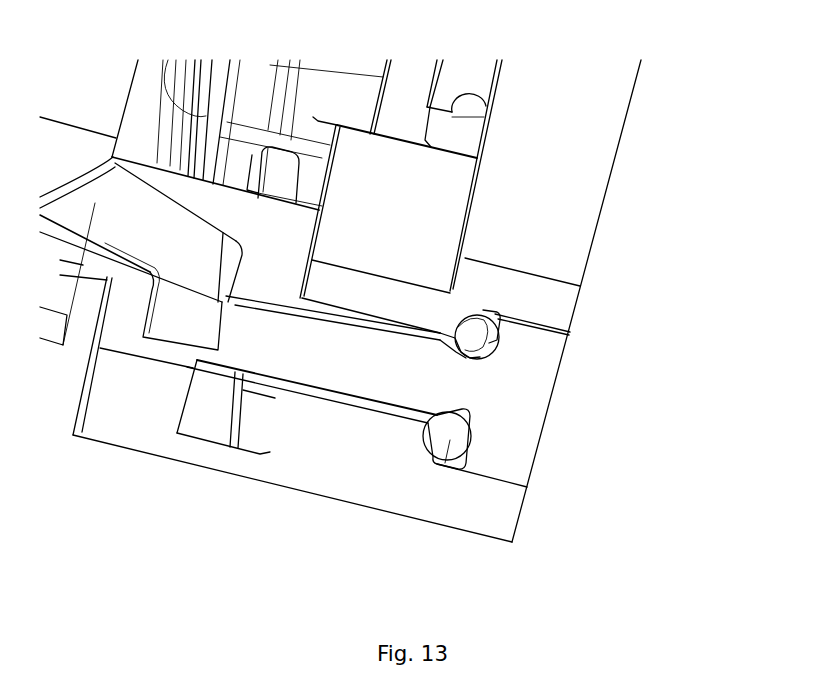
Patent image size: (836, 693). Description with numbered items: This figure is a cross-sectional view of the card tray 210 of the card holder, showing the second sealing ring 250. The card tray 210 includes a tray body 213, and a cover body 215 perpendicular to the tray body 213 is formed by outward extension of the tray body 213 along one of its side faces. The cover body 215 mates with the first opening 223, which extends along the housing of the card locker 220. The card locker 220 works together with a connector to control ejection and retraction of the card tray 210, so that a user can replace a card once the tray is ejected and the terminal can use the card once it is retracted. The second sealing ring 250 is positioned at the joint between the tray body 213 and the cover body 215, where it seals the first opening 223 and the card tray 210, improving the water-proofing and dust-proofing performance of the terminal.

The card tray 210 is at (243, 355).
The tray body 213 is at (407, 373).
The cover body 215 is at (528, 355).
The card locker 220 is at (570, 198).
The first opening 223 is at (495, 317).
The second sealing ring 250 is at (485, 346).